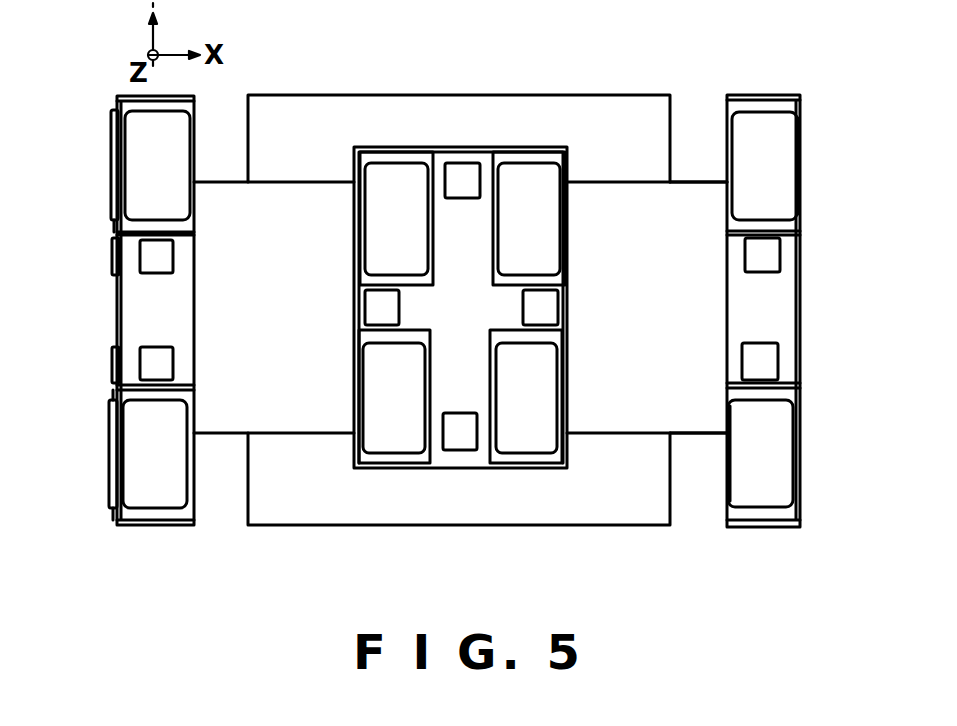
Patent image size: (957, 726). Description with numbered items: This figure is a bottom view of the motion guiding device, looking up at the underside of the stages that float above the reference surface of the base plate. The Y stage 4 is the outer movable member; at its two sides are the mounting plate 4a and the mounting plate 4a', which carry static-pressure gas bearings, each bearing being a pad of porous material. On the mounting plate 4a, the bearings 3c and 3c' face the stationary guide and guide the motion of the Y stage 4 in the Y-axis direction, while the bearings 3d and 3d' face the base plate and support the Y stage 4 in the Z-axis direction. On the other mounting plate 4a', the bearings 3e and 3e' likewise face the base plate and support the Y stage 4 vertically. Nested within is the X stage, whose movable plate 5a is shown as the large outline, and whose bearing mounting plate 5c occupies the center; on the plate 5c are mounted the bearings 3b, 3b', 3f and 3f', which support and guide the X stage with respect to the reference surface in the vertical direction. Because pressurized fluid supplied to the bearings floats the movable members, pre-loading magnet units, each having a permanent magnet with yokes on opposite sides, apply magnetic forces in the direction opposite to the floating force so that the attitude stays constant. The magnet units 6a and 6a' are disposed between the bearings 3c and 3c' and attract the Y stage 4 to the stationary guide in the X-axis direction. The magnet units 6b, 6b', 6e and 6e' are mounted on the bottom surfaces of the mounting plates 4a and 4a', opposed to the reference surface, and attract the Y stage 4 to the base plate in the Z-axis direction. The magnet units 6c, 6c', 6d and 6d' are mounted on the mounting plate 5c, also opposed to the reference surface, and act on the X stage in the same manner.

The Y stage 4 is at (693, 200).
The mounting plate 4a is at (117, 316).
The mounting plate 4a' is at (797, 311).
The movable plate 5a is at (615, 118).
The bearing mounting plate 5c is at (442, 160).
The static-pressure gas bearing 3b is at (396, 161).
The static-pressure gas bearing 3b' is at (529, 161).
The static-pressure gas bearing 3f is at (394, 454).
The static-pressure gas bearing 3f' is at (526, 454).
The static-pressure gas bearing 3c is at (82, 171).
The static-pressure gas bearing 3c' is at (81, 455).
The static-pressure gas bearing 3d is at (184, 157).
The static-pressure gas bearing 3d' is at (155, 491).
The static-pressure gas bearing 3e is at (802, 166).
The static-pressure gas bearing 3e' is at (798, 453).
The pre-loading magnet unit 6a is at (82, 256).
The pre-loading magnet unit 6a' is at (82, 365).
The pre-loading magnet unit 6b is at (199, 260).
The pre-loading magnet unit 6b' is at (203, 364).
The pre-loading magnet unit 6c is at (462, 208).
The pre-loading magnet unit 6c' is at (459, 404).
The pre-loading magnet unit 6d is at (343, 307).
The pre-loading magnet unit 6d' is at (579, 307).
The pre-loading magnet unit 6e is at (719, 257).
The pre-loading magnet unit 6e' is at (717, 361).